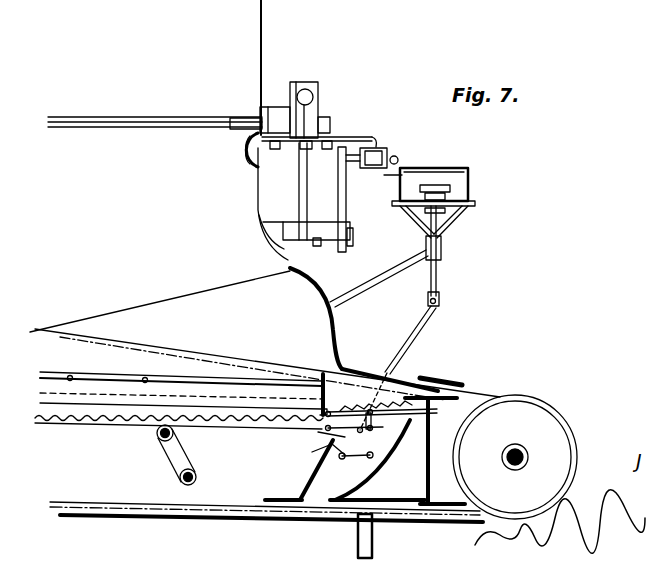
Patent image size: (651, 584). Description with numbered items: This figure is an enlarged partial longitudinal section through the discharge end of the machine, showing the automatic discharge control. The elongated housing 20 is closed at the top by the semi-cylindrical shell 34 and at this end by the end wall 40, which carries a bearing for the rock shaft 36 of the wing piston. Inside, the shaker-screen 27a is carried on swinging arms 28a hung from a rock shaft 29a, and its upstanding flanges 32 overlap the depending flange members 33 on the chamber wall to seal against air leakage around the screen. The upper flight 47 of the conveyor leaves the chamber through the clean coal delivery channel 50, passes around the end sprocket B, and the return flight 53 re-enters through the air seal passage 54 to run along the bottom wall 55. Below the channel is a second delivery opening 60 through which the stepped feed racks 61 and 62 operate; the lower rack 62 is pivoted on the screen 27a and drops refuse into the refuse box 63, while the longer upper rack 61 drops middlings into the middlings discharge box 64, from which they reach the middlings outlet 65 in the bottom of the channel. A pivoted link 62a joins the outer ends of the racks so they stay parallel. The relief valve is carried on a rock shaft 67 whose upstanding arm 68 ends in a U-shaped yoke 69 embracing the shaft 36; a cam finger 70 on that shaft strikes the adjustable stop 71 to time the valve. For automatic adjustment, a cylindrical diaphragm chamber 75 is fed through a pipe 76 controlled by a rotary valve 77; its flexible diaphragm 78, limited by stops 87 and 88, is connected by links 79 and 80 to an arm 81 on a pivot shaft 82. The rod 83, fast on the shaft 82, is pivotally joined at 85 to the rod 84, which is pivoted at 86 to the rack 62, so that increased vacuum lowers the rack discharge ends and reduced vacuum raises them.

The elongated housing 20 is at (155, 159).
The semi-cylindrical shell or cap 34 is at (261, 30).
The rock shaft 36 is at (332, 126).
The end wall 40 is at (318, 288).
The upper flight 47 is at (229, 354).
The clean coal delivery channel 50 is at (441, 376).
The return flight 53 is at (243, 502).
The air seal passage 54 is at (470, 518).
The bottom wall 55 is at (173, 520).
The second delivery opening 60 is at (348, 397).
The feed rack (middlings) 61 is at (401, 410).
The feed rack (refuse) 62 is at (363, 431).
The pivoted link 62a is at (430, 414).
The refuse box 63 is at (320, 498).
The middlings discharge box 64 is at (426, 488).
The middlings outlet 65 is at (357, 547).
The rock shaft 67 is at (327, 242).
The upstanding arm 68 is at (302, 189).
The U-shaped yoke 69 is at (309, 113).
The cam finger 70 is at (313, 81).
The adjustable stop 71 is at (313, 97).
The cylindrical diaphragm chamber 75 is at (470, 180).
The pipe 76 is at (291, 142).
The rotary valve 77 is at (392, 149).
The flexible diaphragm 78 is at (456, 208).
The link 79 is at (438, 270).
The link 80 is at (427, 326).
The arm 81 is at (338, 465).
The pivot shaft 82 is at (340, 462).
The rod 83 is at (356, 464).
The rod 84 is at (367, 473).
The pivotal connection 85 is at (332, 445).
The pivotal connection 86 is at (318, 432).
The stop 87 is at (440, 184).
The stop 88 is at (425, 214).
The depending flange member 33 is at (105, 388).
The upstanding flange 32 is at (85, 412).
The shaker-screen 27a is at (122, 420).
The swinging arm 28a is at (178, 450).
The rock shaft 29a is at (181, 478).
The driving sprocket B is at (557, 432).